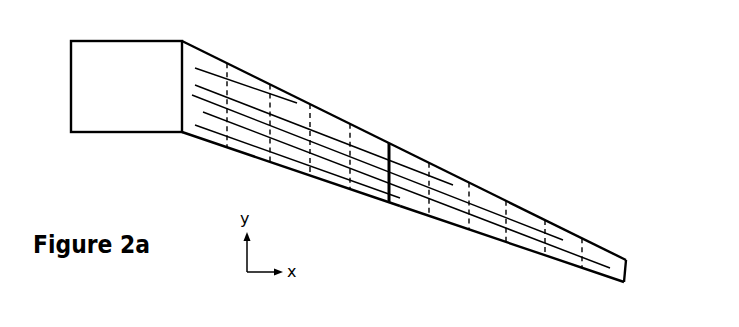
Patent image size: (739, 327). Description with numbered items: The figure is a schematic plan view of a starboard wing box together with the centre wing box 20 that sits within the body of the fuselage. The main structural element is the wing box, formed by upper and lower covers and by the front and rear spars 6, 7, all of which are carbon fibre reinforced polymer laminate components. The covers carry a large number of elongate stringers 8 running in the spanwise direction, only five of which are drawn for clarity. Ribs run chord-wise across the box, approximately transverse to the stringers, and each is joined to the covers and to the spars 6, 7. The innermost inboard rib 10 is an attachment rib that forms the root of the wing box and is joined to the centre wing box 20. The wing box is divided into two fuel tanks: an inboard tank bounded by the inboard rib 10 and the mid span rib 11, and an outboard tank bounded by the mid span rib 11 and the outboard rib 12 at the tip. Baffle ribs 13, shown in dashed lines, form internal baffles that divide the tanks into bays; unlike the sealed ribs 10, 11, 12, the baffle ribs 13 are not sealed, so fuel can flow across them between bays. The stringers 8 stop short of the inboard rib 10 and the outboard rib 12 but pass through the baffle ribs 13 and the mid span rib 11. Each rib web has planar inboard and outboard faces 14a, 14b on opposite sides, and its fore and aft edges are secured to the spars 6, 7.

The centre wing box 20 is at (370, 143).
The inboard rib 10 is at (180, 104).
The front spar 6 is at (327, 111).
The rear spar 7 is at (330, 182).
The stringers 8 is at (404, 206).
The mid span rib 11 is at (391, 151).
The outboard rib 12 is at (628, 270).
The baffle ribs 13 is at (228, 88).
The inboard face 14a is at (227, 132).
The outboard face 14b is at (226, 134).